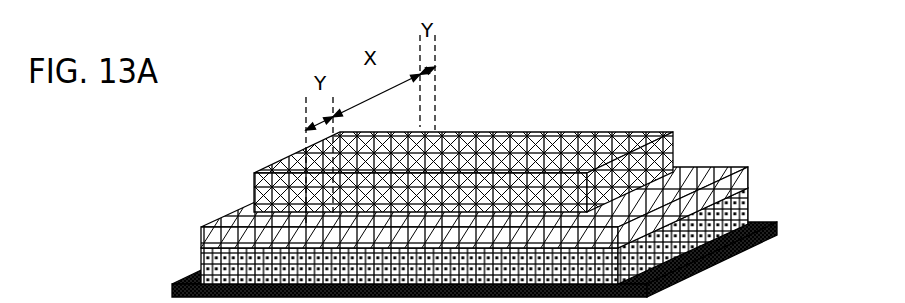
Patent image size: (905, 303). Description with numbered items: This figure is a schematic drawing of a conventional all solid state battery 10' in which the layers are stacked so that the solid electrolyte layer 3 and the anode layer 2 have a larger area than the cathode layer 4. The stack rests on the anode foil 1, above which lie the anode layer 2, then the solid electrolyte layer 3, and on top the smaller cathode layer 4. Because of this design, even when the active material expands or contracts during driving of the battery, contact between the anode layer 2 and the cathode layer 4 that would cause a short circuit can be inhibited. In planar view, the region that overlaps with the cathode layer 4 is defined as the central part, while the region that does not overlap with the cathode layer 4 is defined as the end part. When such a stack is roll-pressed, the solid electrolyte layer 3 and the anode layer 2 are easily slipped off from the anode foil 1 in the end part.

The anode foil 1 is at (777, 232).
The anode layer 2 is at (732, 207).
The solid electrolyte layer 3 is at (732, 178).
The cathode layer 4 is at (673, 143).
The all solid state battery 10' is at (820, 93).